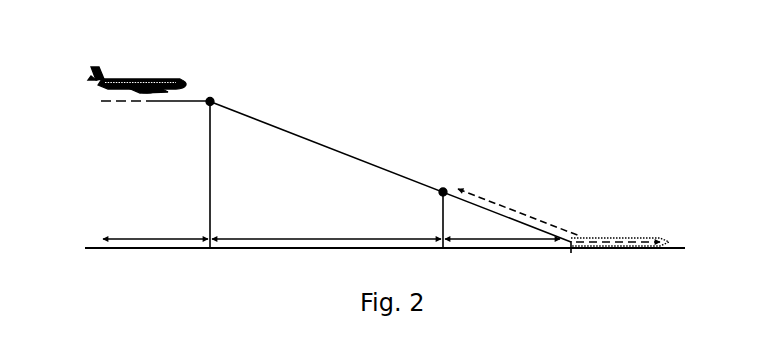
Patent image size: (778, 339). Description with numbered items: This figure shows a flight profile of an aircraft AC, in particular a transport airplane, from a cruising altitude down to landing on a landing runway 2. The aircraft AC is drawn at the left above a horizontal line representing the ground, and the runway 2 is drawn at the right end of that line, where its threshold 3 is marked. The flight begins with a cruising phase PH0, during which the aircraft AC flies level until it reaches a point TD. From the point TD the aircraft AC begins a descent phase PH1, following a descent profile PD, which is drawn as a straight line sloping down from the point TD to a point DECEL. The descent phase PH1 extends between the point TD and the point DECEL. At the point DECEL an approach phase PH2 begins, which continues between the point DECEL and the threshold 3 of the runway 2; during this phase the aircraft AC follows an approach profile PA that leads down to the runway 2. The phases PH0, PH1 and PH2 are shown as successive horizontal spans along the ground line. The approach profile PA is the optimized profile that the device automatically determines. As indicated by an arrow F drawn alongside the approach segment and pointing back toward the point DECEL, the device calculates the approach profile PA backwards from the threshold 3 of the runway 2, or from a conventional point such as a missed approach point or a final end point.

The aircraft AC is at (133, 76).
The point TD is at (211, 98).
The descent profile PD is at (323, 145).
The point DECEL is at (440, 189).
The arrow F is at (497, 205).
The approach profile PA is at (534, 224).
The cruising phase PH0 is at (155, 229).
The descent phase PH1 is at (326, 229).
The approach phase PH2 is at (502, 229).
The threshold 3 is at (570, 253).
The landing runway 2 is at (623, 250).